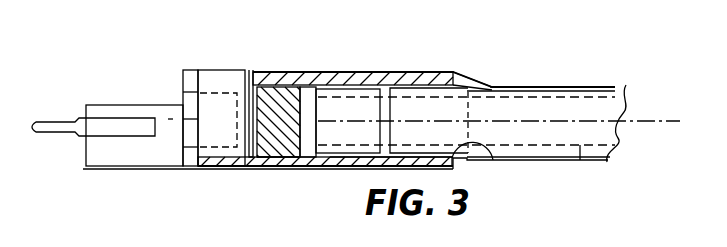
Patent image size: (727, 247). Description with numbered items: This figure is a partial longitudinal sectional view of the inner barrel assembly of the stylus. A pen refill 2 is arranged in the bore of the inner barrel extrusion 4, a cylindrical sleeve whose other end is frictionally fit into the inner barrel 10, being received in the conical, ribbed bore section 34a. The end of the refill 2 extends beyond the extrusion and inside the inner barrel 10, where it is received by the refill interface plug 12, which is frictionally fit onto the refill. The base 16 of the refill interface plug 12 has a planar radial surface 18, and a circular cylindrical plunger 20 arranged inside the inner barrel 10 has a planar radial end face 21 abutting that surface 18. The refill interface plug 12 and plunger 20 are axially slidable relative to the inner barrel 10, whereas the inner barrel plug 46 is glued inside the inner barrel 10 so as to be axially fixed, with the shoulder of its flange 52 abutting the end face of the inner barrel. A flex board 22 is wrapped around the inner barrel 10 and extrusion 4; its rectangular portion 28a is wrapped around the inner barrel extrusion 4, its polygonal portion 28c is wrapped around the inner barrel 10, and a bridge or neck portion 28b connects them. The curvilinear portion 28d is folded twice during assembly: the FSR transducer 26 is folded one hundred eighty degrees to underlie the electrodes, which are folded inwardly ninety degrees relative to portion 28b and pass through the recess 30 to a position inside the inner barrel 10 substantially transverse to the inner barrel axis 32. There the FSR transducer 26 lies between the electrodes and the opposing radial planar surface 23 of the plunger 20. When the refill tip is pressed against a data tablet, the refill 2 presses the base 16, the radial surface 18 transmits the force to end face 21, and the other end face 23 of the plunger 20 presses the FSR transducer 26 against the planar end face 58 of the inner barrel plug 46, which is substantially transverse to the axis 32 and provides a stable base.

The pen refill 2 is at (582, 163).
The inner barrel extrusion 4 is at (523, 97).
The inner barrel 10 is at (283, 163).
The refill interface plug 12 is at (313, 168).
The base 16 is at (310, 76).
The planar radial surface 18 is at (301, 110).
The plunger 20 is at (301, 72).
The planar radial end face 21 is at (289, 157).
The flex board 22 is at (427, 69).
The radial planar surface 23 is at (276, 90).
The FSR transducer 26 is at (237, 158).
The rectangular portion 28a is at (615, 70).
The bridge or neck portion 28b is at (474, 76).
The polygonal portion 28c is at (362, 166).
The curvilinear portion 28d is at (243, 100).
The recess 30 is at (220, 72).
The inner barrel axis 32 is at (641, 122).
The bore section 34a is at (493, 160).
The inner barrel plug 46 is at (178, 170).
The flange 52 is at (185, 70).
The planar end face 58 is at (243, 128).